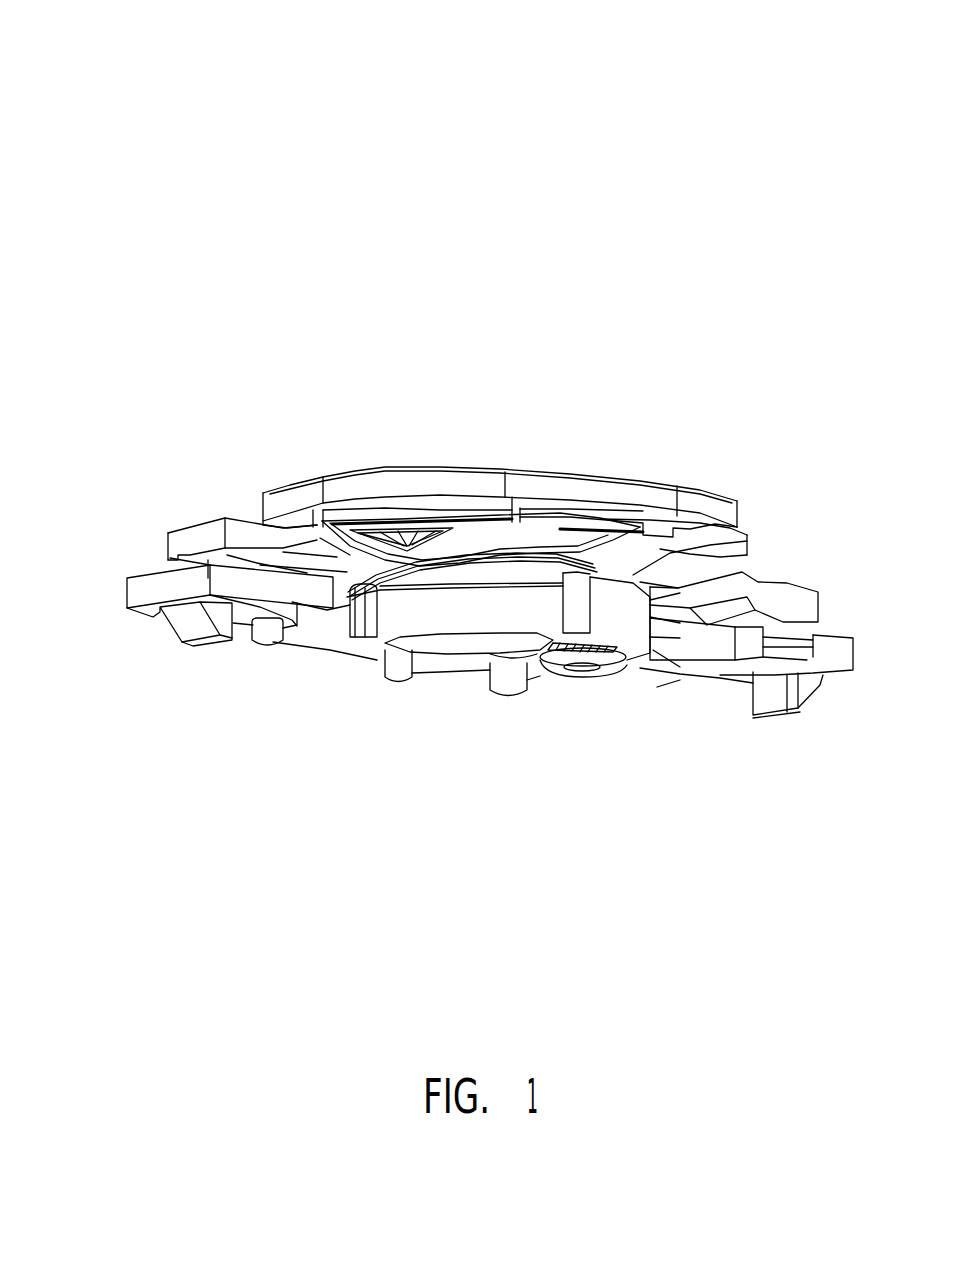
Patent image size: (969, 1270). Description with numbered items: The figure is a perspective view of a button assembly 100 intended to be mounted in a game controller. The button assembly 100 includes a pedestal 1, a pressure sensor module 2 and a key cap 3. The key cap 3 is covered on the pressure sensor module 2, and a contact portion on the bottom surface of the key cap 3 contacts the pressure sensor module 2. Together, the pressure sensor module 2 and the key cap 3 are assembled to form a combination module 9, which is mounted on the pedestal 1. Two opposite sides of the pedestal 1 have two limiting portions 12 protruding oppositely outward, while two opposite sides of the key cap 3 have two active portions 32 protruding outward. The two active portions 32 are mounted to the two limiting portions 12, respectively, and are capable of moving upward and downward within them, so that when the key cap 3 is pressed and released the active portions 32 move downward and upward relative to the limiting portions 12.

The button assembly 100 is at (75, 58).
The pedestal 1 is at (440, 614).
The pressure sensor module 2 is at (548, 545).
The key cap 3 is at (481, 486).
The combination module 9 is at (582, 396).
The limiting portion 12 is at (140, 593).
The active portion 32 is at (177, 547).